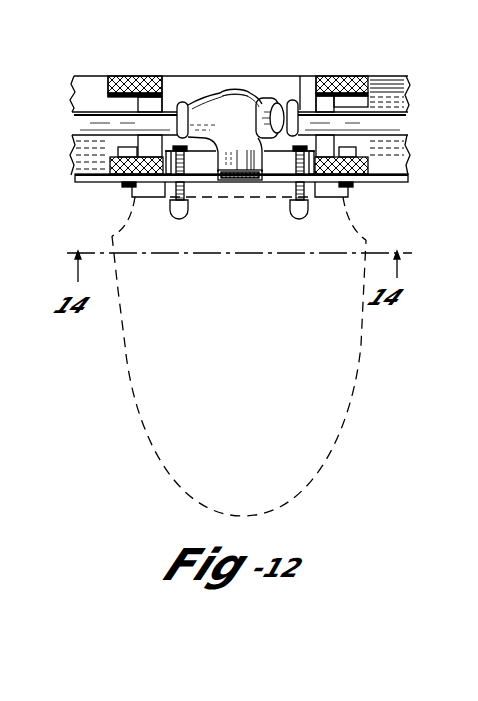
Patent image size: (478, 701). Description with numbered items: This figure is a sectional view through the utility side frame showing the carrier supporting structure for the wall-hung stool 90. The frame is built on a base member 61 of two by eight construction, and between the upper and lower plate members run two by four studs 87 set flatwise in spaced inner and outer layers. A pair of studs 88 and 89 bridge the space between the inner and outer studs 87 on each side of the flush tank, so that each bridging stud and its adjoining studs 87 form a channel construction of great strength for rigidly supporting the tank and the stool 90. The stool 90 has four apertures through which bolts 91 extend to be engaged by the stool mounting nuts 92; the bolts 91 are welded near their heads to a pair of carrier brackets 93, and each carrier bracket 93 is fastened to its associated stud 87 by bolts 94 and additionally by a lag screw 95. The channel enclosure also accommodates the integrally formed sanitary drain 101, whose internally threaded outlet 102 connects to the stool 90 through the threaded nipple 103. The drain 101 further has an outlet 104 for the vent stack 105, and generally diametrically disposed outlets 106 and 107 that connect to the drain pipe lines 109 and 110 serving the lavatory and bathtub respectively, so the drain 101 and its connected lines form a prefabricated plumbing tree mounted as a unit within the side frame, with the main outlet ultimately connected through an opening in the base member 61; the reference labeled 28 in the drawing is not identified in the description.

The base plate 28 is at (399, 182).
The base member 61 is at (85, 82).
The studs 87 is at (153, 78).
The stud 88 is at (140, 139).
The stud 89 is at (338, 143).
The wall-hung stool 90 is at (350, 392).
The bolts 91 is at (186, 166).
The stool mounting nuts 92 is at (176, 215).
The carrier brackets 93 is at (187, 151).
The bolts 94 is at (128, 184).
The lag screws 95 is at (170, 184).
The sanitary drain 101 is at (232, 91).
The internally threaded outlet 102 is at (240, 156).
The threaded nipple 103 is at (240, 183).
The outlet 104 is at (240, 111).
The vent stack 105 is at (266, 105).
The outlet 106 is at (192, 104).
The outlet 107 is at (292, 99).
The drain pipe line 109 is at (70, 116).
The drain pipe line 110 is at (409, 114).